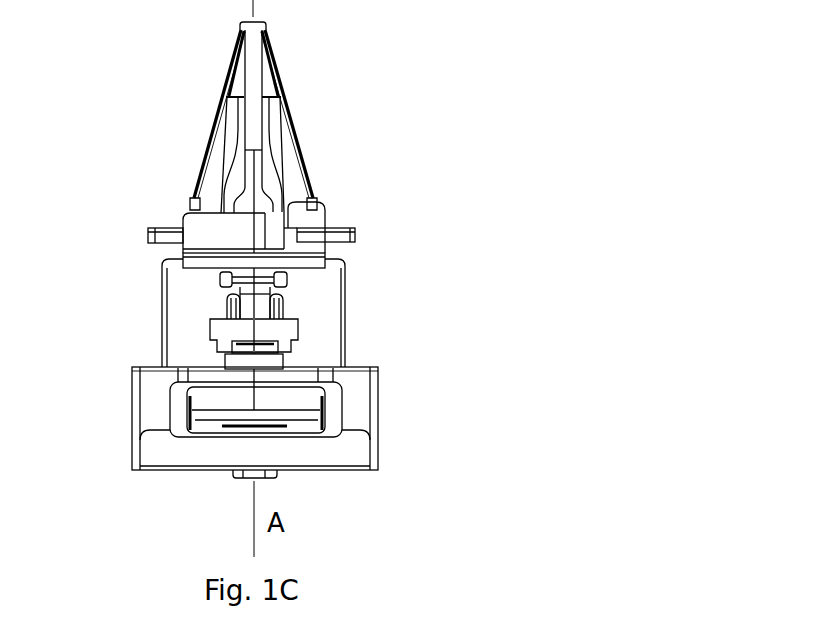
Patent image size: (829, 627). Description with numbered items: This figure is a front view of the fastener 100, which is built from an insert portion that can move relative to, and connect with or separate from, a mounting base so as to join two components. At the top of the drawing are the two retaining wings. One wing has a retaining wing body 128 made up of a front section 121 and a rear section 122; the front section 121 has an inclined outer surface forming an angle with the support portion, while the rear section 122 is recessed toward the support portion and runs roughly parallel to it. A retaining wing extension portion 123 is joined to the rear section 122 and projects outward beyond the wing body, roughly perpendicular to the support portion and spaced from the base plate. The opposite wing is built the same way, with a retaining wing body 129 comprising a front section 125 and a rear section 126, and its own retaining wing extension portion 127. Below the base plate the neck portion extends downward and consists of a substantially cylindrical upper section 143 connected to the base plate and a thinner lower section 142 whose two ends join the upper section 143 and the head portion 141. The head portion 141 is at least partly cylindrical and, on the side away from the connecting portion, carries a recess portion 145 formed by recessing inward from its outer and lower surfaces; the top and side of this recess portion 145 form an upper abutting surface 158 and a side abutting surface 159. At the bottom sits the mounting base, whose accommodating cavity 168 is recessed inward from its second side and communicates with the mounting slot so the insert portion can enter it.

The fastener 100 is at (440, 118).
The front section 121 is at (227, 107).
The rear section 122 is at (207, 212).
The retaining wing extension portion 123 is at (150, 233).
The front section 125 is at (290, 127).
The rear section 126 is at (305, 203).
The retaining wing extension portion 127 is at (357, 232).
The retaining wing body 128 is at (216, 142).
The retaining wing body 129 is at (300, 152).
The head portion 141 is at (290, 338).
The lower section 142 is at (283, 305).
The upper section 143 is at (285, 282).
The recess portion 145 is at (245, 329).
The upper abutting surface 158 is at (252, 338).
The side abutting surface 159 is at (240, 345).
The accommodating cavity 168 is at (307, 408).